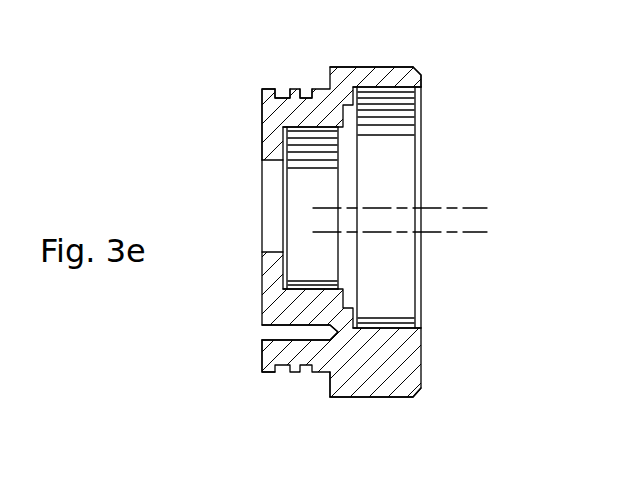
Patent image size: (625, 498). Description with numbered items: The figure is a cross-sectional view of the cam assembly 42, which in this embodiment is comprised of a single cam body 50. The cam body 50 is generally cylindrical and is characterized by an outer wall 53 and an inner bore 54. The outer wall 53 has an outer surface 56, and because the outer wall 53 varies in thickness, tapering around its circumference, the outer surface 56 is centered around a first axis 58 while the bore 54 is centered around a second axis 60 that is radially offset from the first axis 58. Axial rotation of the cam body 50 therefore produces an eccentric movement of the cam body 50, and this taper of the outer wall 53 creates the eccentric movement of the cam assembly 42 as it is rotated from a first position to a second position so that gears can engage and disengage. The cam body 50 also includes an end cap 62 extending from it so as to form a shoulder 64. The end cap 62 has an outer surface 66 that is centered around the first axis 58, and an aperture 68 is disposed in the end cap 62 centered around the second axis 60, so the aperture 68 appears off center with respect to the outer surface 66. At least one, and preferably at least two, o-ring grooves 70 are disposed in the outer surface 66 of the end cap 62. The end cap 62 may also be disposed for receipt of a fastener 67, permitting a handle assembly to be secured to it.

The cam assembly 42 is at (374, 410).
The cam body 50 is at (417, 69).
The outer wall 53 is at (381, 76).
The inner bore 54 is at (393, 88).
The outer surface 56 is at (393, 398).
The first axis 58 is at (463, 234).
The second axis 60 is at (467, 207).
The end cap 62 is at (268, 380).
The shoulder 64 is at (328, 389).
The outer surface 66 is at (270, 88).
The fastener 67 is at (272, 333).
The aperture 68 is at (272, 164).
The o-ring grooves 70 is at (306, 96).